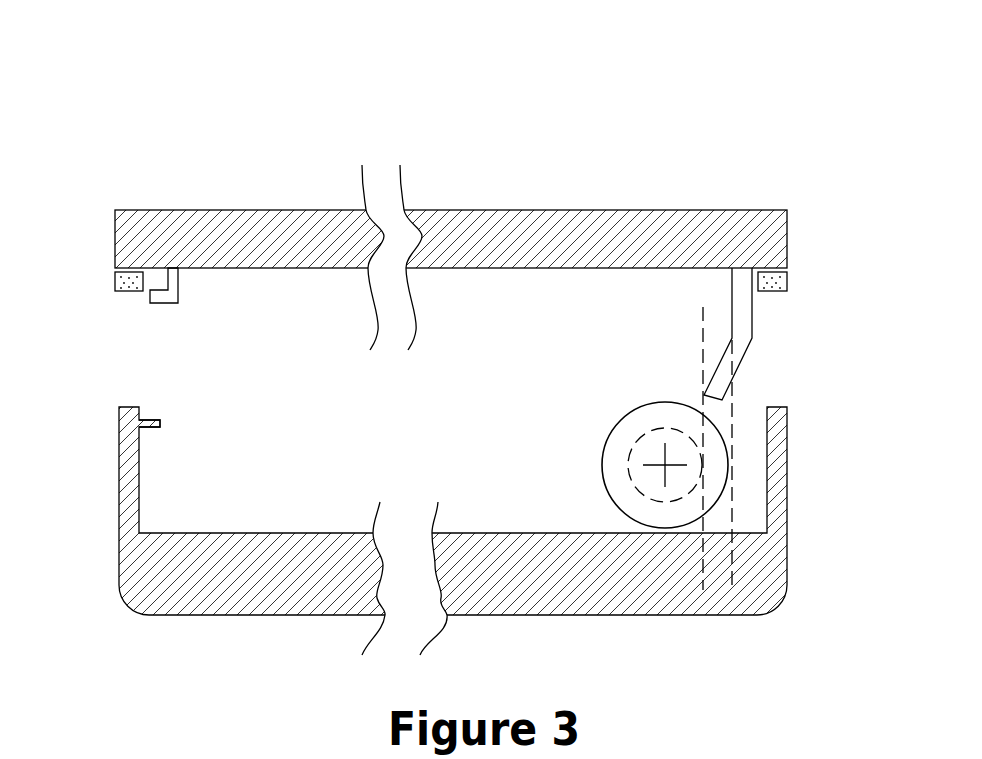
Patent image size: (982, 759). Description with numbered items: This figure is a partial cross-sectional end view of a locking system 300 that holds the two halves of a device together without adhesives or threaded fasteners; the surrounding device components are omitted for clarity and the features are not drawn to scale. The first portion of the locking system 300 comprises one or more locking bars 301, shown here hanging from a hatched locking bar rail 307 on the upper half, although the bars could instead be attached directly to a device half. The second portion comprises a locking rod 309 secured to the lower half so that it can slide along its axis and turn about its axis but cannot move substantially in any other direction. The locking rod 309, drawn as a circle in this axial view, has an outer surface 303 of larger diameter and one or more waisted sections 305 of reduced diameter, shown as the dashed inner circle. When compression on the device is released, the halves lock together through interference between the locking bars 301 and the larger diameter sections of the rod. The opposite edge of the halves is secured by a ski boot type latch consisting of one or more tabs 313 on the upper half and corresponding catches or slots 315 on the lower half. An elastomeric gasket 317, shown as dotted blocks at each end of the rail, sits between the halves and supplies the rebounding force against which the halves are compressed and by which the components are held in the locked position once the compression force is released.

The locking system 300 is at (261, 72).
The locking bar 301 is at (752, 334).
The outer surface 303 is at (602, 462).
The waisted section 305 is at (632, 478).
The locking bar rail 307 is at (760, 210).
The locking rod 309 is at (636, 387).
The tab 313 is at (178, 296).
The catch or slot 315 is at (160, 422).
The elastomeric gasket 317 is at (115, 281).